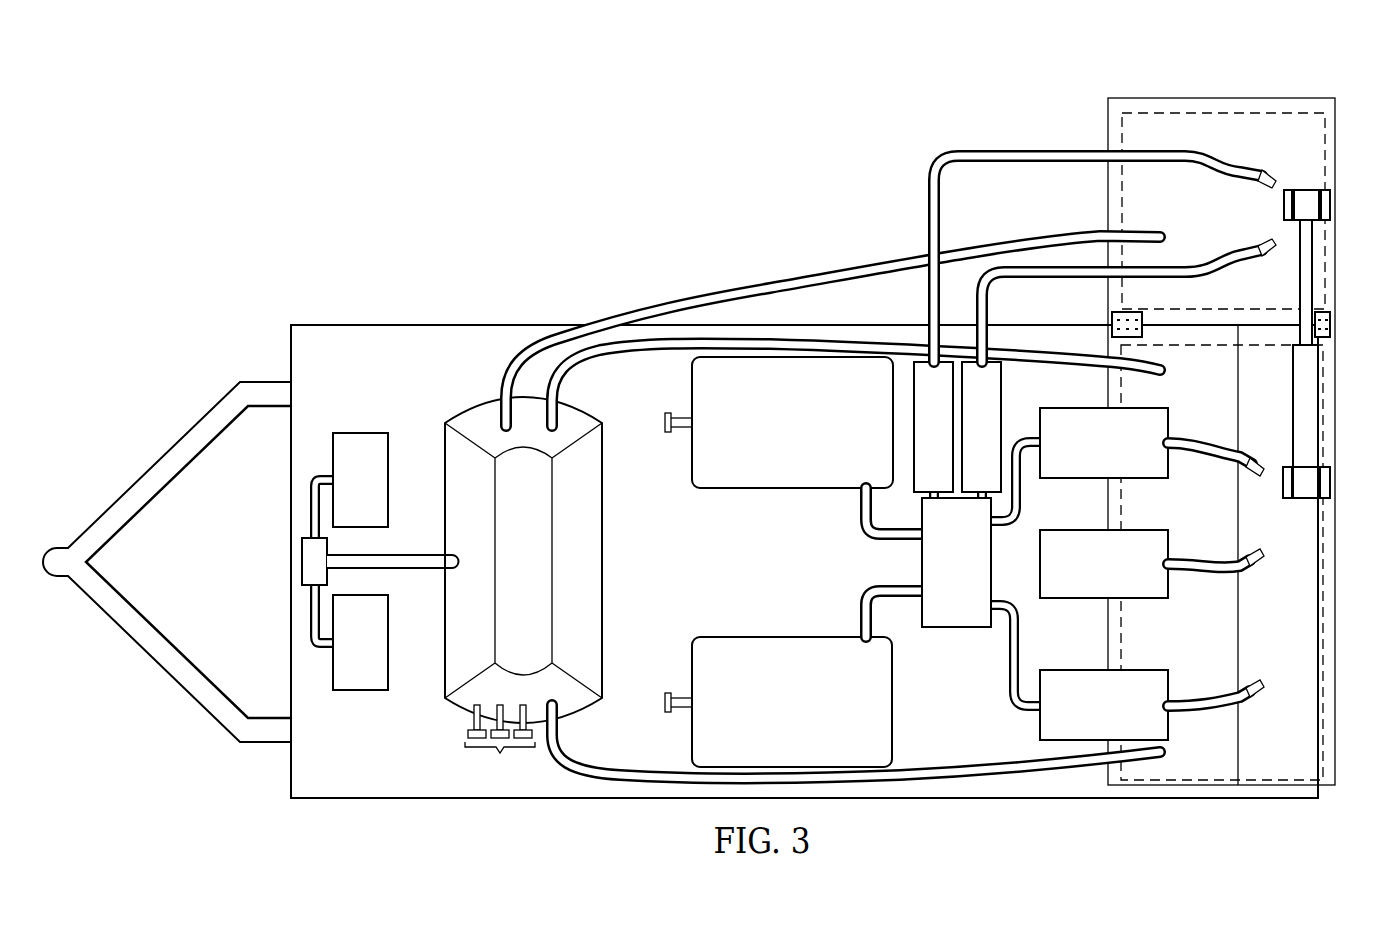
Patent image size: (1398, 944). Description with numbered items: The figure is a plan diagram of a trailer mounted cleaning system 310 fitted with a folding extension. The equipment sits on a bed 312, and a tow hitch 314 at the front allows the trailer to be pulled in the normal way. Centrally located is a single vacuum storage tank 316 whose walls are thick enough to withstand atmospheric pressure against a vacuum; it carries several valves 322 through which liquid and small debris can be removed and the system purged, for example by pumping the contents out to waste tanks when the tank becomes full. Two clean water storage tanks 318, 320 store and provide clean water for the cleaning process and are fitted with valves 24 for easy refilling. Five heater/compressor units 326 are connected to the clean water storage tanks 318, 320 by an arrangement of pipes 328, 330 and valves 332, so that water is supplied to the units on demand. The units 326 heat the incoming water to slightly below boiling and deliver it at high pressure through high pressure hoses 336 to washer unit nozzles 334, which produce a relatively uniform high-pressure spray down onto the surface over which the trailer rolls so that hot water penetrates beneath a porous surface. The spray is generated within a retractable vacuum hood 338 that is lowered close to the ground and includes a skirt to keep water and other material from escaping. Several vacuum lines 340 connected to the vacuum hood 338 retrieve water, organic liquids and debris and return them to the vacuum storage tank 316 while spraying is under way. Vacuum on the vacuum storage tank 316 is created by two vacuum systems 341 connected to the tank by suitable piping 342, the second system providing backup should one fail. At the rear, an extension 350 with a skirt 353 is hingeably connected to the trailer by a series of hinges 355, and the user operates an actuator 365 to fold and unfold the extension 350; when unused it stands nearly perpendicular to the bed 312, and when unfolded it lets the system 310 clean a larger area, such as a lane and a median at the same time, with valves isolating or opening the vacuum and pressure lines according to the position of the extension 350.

The trailer mounted cleaning system 310 is at (642, 227).
The bed 312 is at (446, 324).
The tow hitch 314 is at (170, 445).
The vacuum storage tank 316 is at (504, 569).
The clean water storage tank 318 is at (774, 432).
The clean water storage tank 320 is at (773, 711).
The valves 322 is at (500, 748).
The valves 24 is at (667, 432).
The heater/compressor units 326 is at (916, 437).
The pipes 328 is at (858, 512).
The pipes 330 is at (1022, 484).
The valves 332 is at (937, 567).
The washer unit nozzles 334 is at (1274, 192).
The high pressure hoses 336 is at (1030, 155).
The retractable vacuum hood 338 is at (1320, 790).
The vacuum lines 340 is at (858, 268).
The vacuum systems 341 is at (358, 432).
The piping 342 is at (430, 553).
The extension 350 is at (1305, 98).
The skirt 353 is at (1212, 113).
The hinges 355 is at (1112, 320).
The actuator 365 is at (1320, 425).